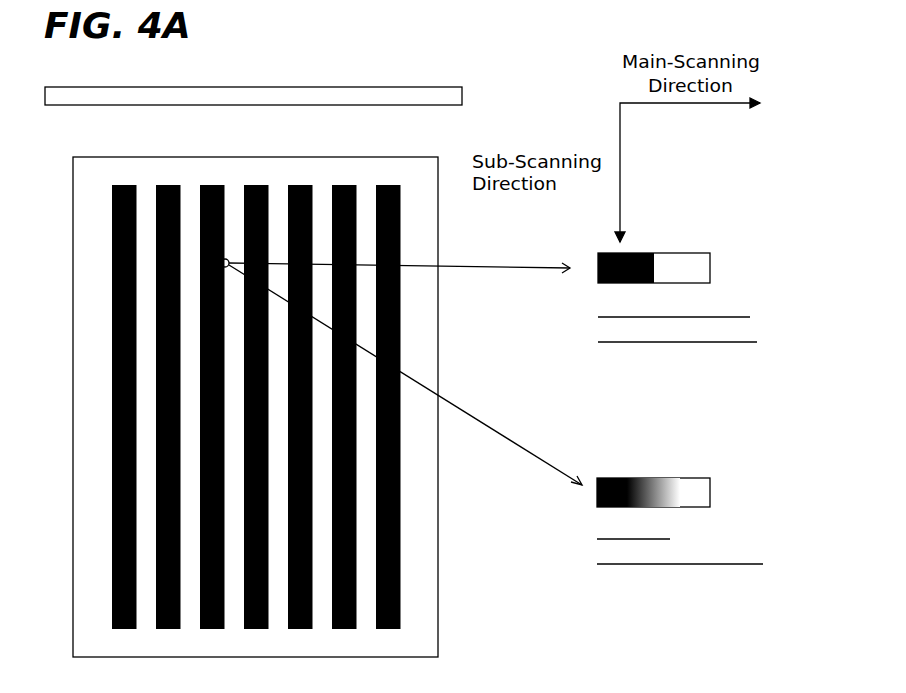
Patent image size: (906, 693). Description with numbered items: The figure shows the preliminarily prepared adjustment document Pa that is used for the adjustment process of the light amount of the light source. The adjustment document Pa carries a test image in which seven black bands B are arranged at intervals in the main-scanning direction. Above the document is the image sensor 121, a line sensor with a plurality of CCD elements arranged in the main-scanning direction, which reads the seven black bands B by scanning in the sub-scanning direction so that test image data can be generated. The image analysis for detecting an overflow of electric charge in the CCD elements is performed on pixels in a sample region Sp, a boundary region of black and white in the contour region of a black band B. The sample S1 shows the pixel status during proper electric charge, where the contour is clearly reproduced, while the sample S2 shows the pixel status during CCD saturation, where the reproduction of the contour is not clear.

The image sensor 121 is at (378, 87).
The adjustment document Pa is at (412, 157).
The black band B is at (181, 185).
The sample region Sp is at (228, 261).
The sample during proper electric charge S1 is at (712, 269).
The sample during CCD saturation S2 is at (712, 492).